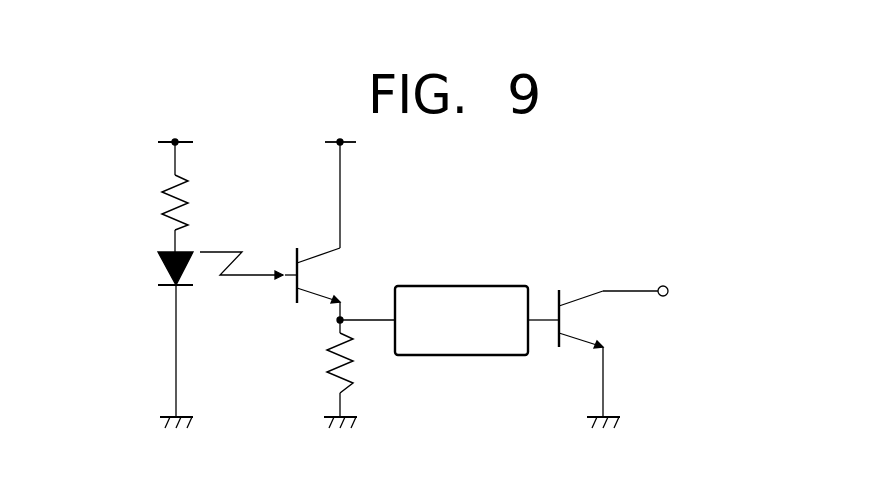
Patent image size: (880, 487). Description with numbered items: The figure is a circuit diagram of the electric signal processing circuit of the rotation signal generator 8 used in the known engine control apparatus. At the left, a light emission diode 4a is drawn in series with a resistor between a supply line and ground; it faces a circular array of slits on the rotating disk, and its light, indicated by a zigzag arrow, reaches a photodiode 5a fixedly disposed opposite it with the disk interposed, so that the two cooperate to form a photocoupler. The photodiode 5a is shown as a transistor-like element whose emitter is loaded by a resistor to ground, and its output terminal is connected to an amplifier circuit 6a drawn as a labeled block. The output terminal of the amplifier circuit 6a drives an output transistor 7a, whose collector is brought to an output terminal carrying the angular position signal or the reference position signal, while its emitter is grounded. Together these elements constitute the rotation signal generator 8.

The light emission diode 4a is at (152, 263).
The photodiode 5a is at (324, 247).
The amplifier circuit 6a is at (473, 285).
The output transistor 7a is at (591, 293).
The rotation signal generator 8 is at (424, 251).